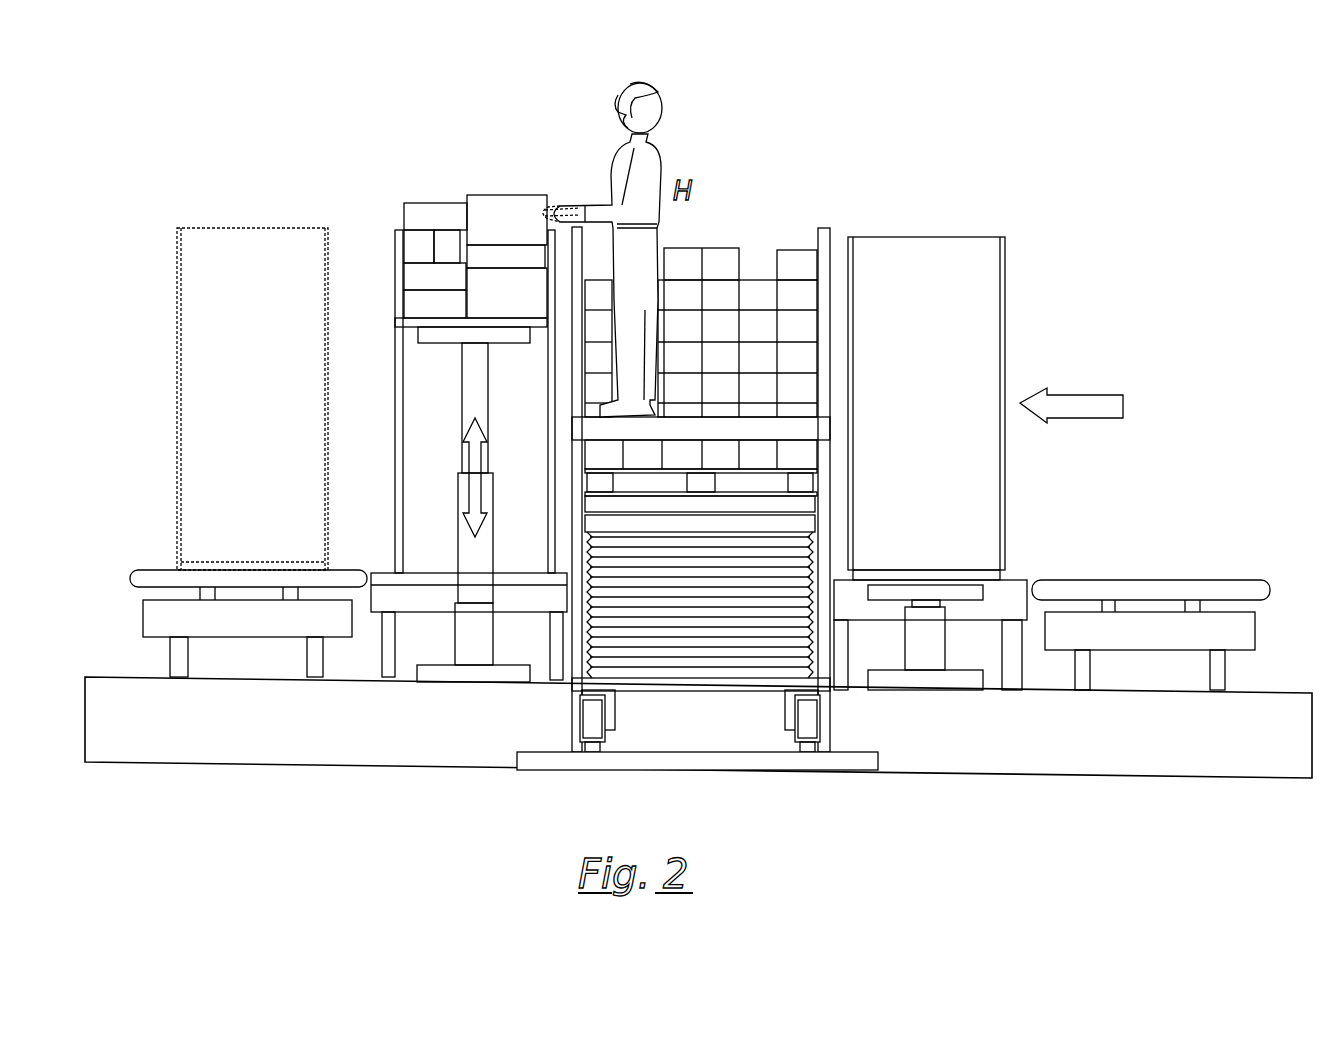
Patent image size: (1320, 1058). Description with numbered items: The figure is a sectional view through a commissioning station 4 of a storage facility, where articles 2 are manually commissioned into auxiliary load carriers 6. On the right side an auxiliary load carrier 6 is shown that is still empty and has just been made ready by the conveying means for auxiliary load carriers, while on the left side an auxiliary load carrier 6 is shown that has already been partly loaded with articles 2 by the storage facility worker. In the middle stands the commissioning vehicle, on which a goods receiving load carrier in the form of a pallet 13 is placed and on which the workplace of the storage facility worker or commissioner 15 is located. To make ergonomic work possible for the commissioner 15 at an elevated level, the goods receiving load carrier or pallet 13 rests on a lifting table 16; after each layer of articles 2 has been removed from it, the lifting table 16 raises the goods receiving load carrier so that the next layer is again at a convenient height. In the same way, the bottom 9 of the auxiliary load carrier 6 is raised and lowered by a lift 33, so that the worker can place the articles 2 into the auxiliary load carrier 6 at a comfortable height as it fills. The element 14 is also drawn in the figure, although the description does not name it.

The commissioning station 4 is at (1000, 132).
The articles 2 is at (483, 196).
The auxiliary load carrier 6 is at (177, 240).
The bottom 9 is at (195, 570).
The pallet 13 is at (803, 488).
The rail / base plate 14 is at (761, 788).
The commissioner 15 is at (663, 108).
The lifting table 16 is at (797, 528).
The lift 33 is at (477, 645).